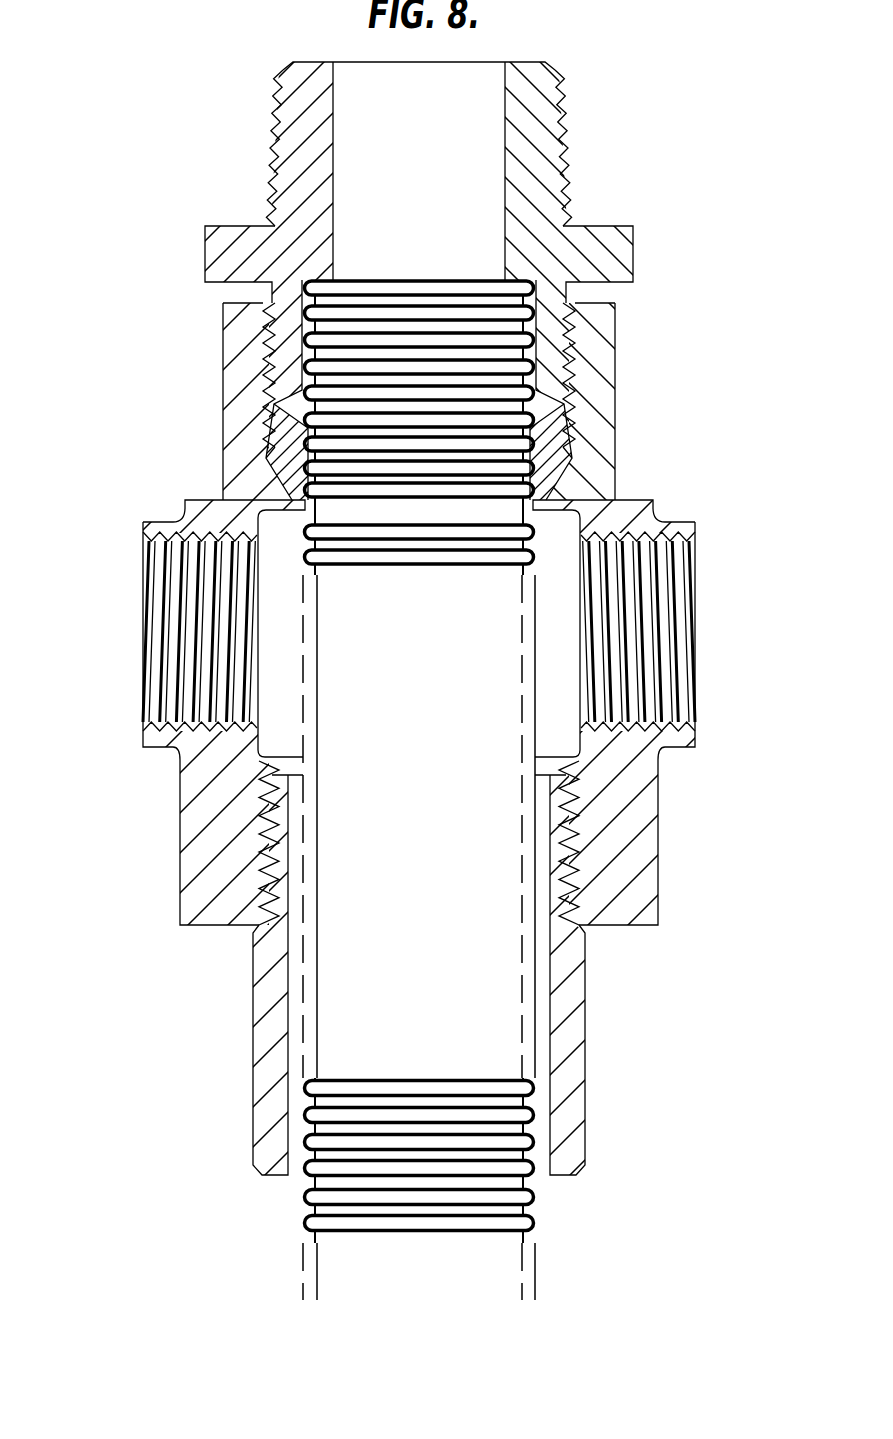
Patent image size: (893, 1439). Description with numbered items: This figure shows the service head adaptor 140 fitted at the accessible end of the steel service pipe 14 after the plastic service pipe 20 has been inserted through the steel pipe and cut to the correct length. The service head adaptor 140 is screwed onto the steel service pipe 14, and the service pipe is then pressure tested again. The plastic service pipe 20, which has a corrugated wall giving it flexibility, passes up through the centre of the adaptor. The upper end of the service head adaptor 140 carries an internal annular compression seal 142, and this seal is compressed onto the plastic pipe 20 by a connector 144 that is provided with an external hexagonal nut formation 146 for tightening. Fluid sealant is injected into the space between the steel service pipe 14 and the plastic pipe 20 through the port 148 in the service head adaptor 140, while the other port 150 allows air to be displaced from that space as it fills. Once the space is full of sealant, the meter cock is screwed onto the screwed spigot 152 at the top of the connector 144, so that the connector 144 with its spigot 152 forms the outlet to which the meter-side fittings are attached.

The steel service pipe 14 is at (573, 1053).
The plastic service pipe 20 is at (515, 1147).
The service head adaptor 140 is at (655, 867).
The internal annular compression seal 142 is at (550, 449).
The connector 144 is at (536, 167).
The external hexagonal nut formation 146 is at (632, 257).
The port 148 is at (173, 640).
The port 150 is at (660, 657).
The screwed spigot 152 is at (522, 78).